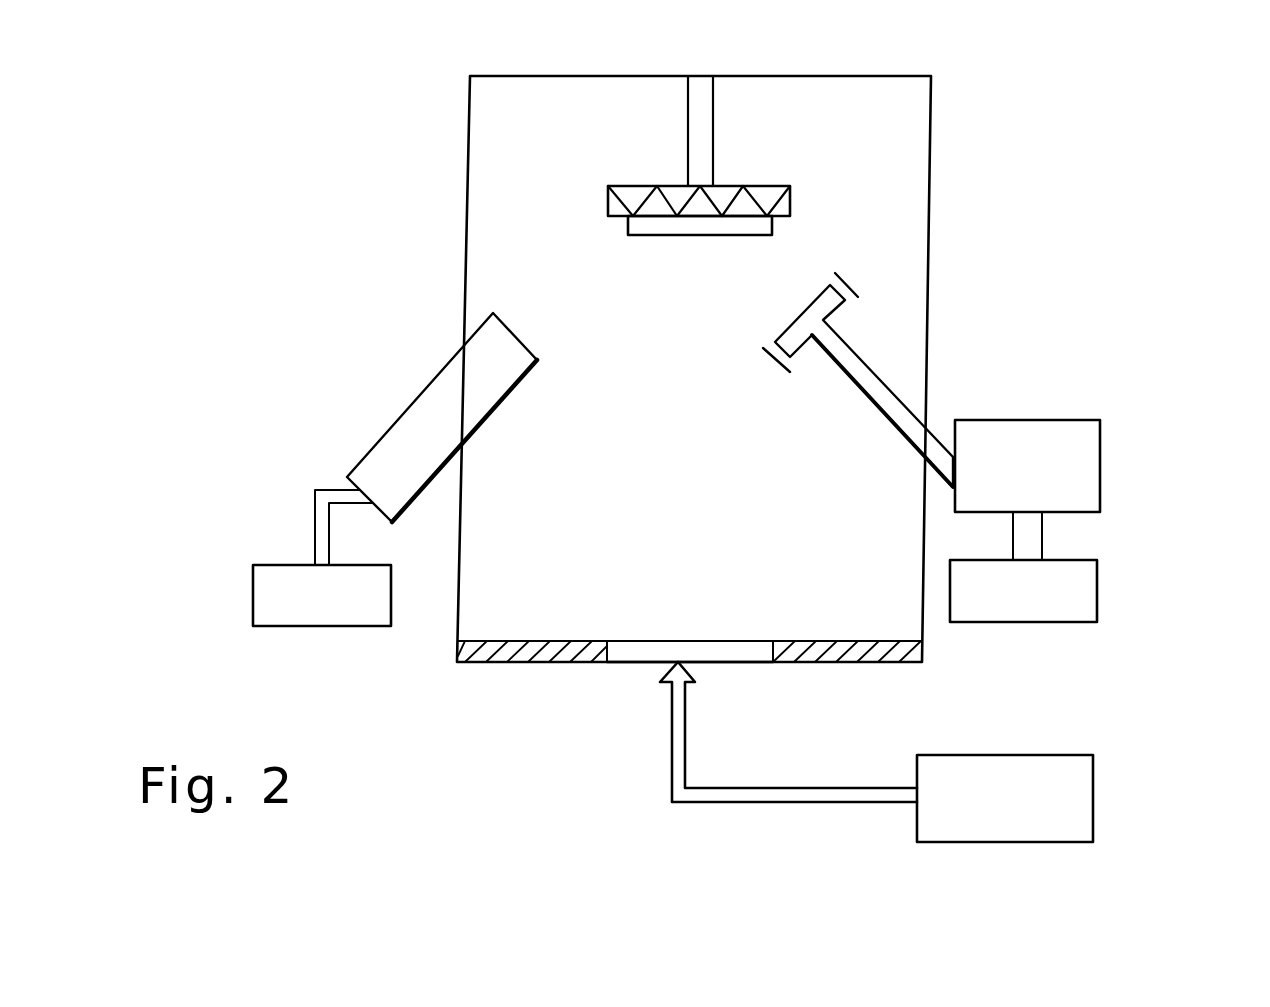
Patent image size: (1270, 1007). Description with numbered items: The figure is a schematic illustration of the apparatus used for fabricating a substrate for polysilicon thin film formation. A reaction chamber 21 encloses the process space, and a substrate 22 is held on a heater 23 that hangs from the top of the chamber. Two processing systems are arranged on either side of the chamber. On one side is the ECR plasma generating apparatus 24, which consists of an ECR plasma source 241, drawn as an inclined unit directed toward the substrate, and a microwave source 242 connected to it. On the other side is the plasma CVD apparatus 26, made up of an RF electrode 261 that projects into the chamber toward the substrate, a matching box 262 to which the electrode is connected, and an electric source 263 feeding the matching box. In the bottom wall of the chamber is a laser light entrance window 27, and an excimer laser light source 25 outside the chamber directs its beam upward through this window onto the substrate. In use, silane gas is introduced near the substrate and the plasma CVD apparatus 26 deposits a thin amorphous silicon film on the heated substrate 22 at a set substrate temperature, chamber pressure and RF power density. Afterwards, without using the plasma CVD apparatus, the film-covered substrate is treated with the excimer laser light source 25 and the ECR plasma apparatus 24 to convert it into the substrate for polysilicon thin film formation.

The reaction chamber 21 is at (907, 112).
The substrate 22 is at (774, 226).
The heater 23 is at (792, 202).
The ECR plasma generating apparatus 24 is at (202, 413).
The ECR plasma source 241 is at (377, 452).
The microwave source 242 is at (283, 572).
The excimer laser light source 25 is at (1070, 803).
The plasma CVD apparatus 26 is at (1175, 335).
The RF electrode 261 is at (858, 300).
The matching box 262 is at (1077, 447).
The electric source 263 is at (1077, 587).
The laser light entrance window 27 is at (623, 652).